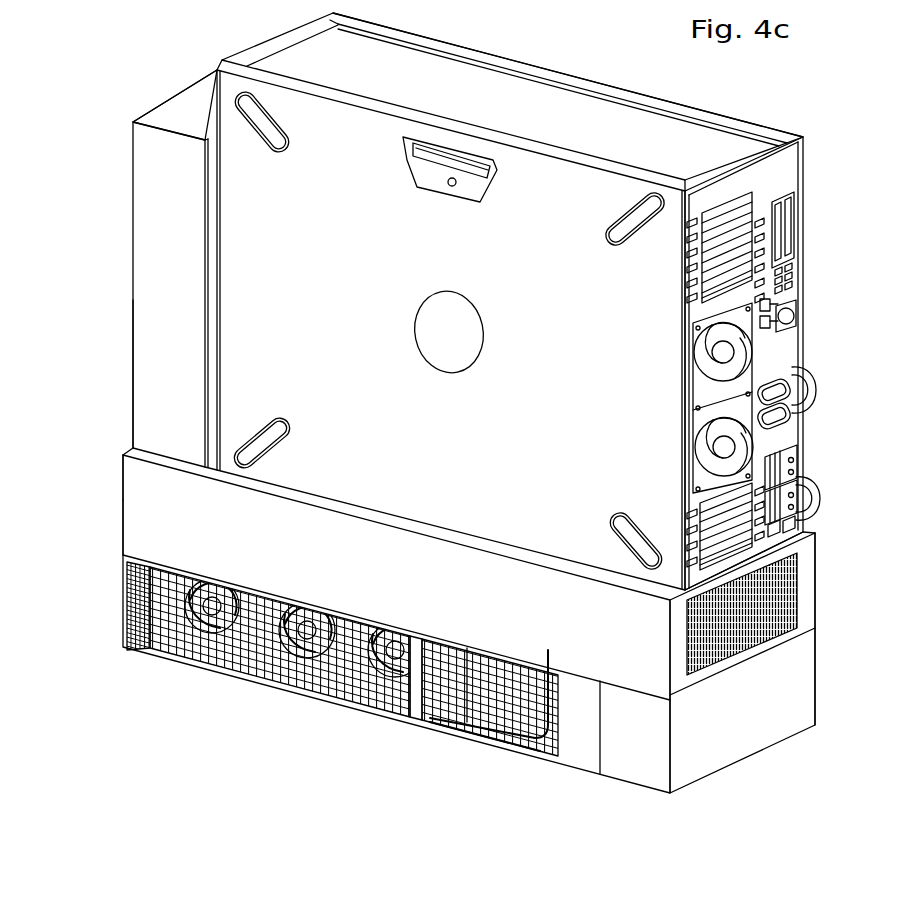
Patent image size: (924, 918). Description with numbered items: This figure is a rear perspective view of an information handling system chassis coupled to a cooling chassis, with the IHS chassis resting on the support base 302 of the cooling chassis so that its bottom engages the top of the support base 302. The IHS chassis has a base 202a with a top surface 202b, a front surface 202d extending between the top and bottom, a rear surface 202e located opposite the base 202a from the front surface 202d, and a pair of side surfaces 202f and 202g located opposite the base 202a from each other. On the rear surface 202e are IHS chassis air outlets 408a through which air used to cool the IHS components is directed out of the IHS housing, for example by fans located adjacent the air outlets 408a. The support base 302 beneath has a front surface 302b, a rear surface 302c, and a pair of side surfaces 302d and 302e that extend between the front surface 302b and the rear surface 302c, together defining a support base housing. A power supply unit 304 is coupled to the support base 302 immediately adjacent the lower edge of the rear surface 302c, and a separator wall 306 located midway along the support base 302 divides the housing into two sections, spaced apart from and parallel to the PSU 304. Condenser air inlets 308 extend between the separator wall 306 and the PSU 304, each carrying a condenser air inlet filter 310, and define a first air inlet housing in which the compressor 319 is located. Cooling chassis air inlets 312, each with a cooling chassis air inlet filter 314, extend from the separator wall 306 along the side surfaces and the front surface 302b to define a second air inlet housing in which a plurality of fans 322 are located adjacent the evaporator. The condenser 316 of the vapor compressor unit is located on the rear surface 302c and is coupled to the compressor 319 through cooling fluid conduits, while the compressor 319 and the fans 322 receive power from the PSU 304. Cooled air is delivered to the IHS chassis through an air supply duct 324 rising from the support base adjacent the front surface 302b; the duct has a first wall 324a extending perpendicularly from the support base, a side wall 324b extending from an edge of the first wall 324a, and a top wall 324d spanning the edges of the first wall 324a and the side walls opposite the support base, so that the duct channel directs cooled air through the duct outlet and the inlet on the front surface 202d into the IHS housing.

The base 202a is at (805, 225).
The top surface 202b is at (532, 96).
The front surface 202d is at (263, 42).
The rear surface 202e is at (792, 340).
The side surface 202f is at (335, 505).
The side surface 202g is at (695, 105).
The support base 302 is at (818, 553).
The front surface 302b is at (123, 470).
The rear surface 302c is at (807, 608).
The side surface 302d is at (125, 521).
The side surface 302e is at (812, 531).
The power supply unit (PSU) 304 is at (762, 725).
The separator wall 306 is at (418, 707).
The condenser air inlets 308 is at (568, 691).
The condenser air inlet filter 310 is at (502, 713).
The cooling chassis air inlets 312 is at (124, 601).
The cooling chassis air inlet filter 314 is at (128, 620).
The condenser 316 is at (800, 585).
The compressor 319 is at (456, 667).
The fans 322 is at (188, 617).
The air supply duct 324 is at (153, 107).
The first wall 324a is at (133, 215).
The side wall 324b is at (147, 283).
The top wall 324d is at (198, 98).
The IHS chassis air outlets 408a is at (724, 353).